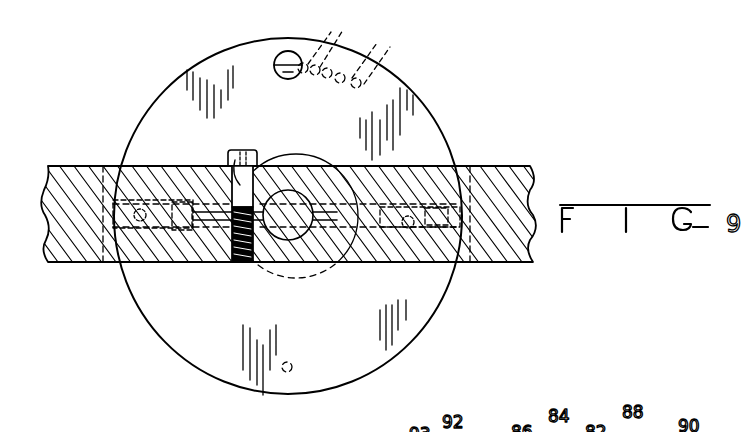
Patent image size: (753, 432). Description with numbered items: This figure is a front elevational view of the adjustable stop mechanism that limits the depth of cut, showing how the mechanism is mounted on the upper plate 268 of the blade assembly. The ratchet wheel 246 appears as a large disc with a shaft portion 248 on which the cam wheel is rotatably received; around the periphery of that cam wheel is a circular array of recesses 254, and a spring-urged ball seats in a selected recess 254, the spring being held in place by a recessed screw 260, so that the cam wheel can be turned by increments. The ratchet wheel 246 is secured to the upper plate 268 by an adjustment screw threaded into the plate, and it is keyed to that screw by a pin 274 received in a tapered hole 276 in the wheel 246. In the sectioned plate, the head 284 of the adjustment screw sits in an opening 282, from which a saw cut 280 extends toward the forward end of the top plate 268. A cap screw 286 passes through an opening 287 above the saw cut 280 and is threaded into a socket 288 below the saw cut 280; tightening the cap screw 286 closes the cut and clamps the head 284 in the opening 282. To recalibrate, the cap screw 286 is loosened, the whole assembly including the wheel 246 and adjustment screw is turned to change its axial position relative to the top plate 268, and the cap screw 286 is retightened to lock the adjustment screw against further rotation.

The ratchet wheel 246 is at (412, 97).
The shaft portion 248 is at (311, 272).
The recesses 254 is at (288, 406).
The recessed screw 260 is at (288, 52).
The upper plate 268 is at (500, 166).
The pin 274 is at (183, 203).
The tapered hole 276 is at (428, 262).
The saw cut 280 is at (213, 221).
The opening 282 is at (270, 163).
The head 284 is at (333, 258).
The cap screw 286 is at (244, 150).
The opening 287 is at (235, 162).
The socket 288 is at (243, 263).